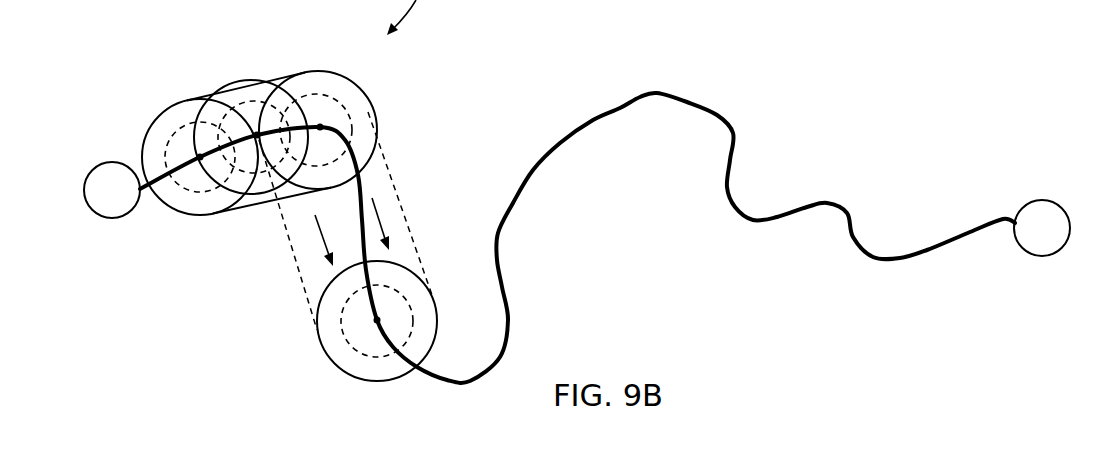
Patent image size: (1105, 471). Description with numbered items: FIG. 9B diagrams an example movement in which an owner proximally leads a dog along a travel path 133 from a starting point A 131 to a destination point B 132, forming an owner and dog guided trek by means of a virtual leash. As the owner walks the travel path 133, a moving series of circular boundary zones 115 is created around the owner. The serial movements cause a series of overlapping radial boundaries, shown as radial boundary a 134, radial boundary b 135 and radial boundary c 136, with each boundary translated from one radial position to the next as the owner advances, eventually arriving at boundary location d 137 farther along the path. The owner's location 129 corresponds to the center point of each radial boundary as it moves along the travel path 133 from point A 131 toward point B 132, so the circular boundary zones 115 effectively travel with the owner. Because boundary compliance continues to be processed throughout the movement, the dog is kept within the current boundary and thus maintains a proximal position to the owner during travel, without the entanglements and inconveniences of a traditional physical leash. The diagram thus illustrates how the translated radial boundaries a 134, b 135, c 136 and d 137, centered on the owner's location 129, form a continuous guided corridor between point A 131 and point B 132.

The circular boundary zones 115 is at (205, 79).
The owner's location 129 is at (199, 156).
The point A 131 is at (91, 172).
The point B 132 is at (1060, 201).
The travel path 133 is at (683, 95).
The radial boundary a 134 is at (157, 83).
The radial boundary b 135 is at (245, 53).
The radial boundary c 136 is at (337, 53).
The boundary location d 137 is at (445, 278).